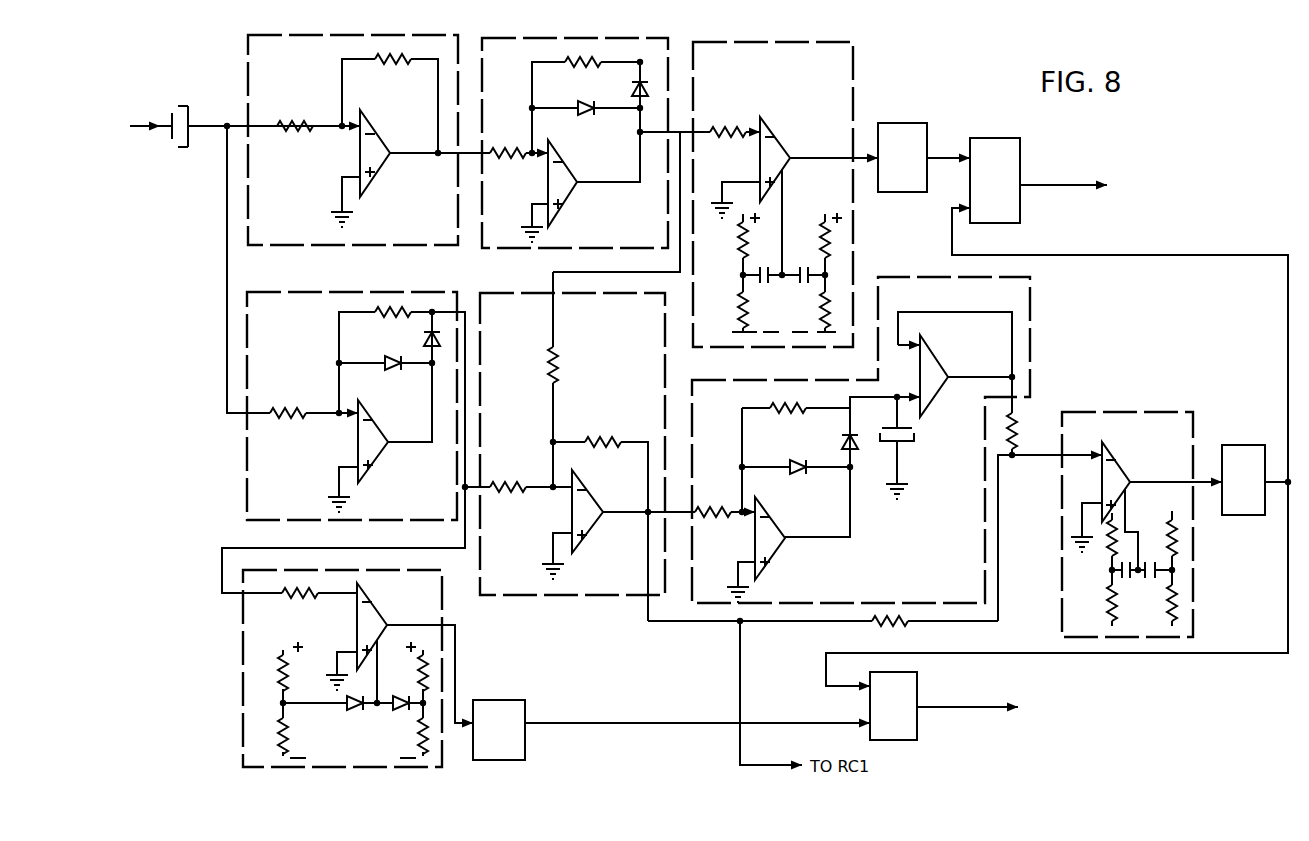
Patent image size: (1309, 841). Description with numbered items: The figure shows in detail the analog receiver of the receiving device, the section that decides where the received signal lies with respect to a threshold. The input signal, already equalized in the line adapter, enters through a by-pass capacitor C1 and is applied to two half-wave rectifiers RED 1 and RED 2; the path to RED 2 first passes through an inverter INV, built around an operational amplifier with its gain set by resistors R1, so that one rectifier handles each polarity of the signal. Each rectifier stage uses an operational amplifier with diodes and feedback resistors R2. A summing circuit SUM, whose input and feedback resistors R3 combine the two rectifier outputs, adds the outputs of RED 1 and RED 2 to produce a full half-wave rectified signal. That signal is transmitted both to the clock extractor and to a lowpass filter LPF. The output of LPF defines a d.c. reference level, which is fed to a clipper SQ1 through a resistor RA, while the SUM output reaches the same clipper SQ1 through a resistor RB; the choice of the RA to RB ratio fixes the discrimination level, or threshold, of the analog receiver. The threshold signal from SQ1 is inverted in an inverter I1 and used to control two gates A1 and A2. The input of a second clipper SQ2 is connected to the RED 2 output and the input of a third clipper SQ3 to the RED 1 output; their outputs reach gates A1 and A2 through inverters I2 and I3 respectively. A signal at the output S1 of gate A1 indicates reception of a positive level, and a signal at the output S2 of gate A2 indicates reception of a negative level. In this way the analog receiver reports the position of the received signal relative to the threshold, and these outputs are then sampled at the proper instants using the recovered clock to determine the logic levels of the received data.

The by-pass capacitor C1 is at (182, 112).
The inverter resistor R1 is at (345, 92).
The rectifier resistor R2 is at (435, 237).
The summing resistor R3 is at (558, 419).
The resistor RA is at (1026, 433).
The resistor RB is at (823, 633).
The inverter INV is at (391, 34).
The half-wave rectifier RED 1 is at (392, 291).
The half-wave rectifier RED 2 is at (631, 36).
The summing circuit SUM is at (547, 291).
The lowpass filter LPF is at (1034, 280).
The clipper SQ1 is at (1137, 409).
The clipper SQ2 is at (820, 42).
The clipper SQ3 is at (241, 645).
The inverter I1 is at (1243, 480).
The inverter I2 is at (902, 157).
The inverter I3 is at (499, 730).
The gate A1 is at (995, 180).
The gate A2 is at (893, 706).
The output S1 is at (1077, 186).
The output S2 is at (981, 708).